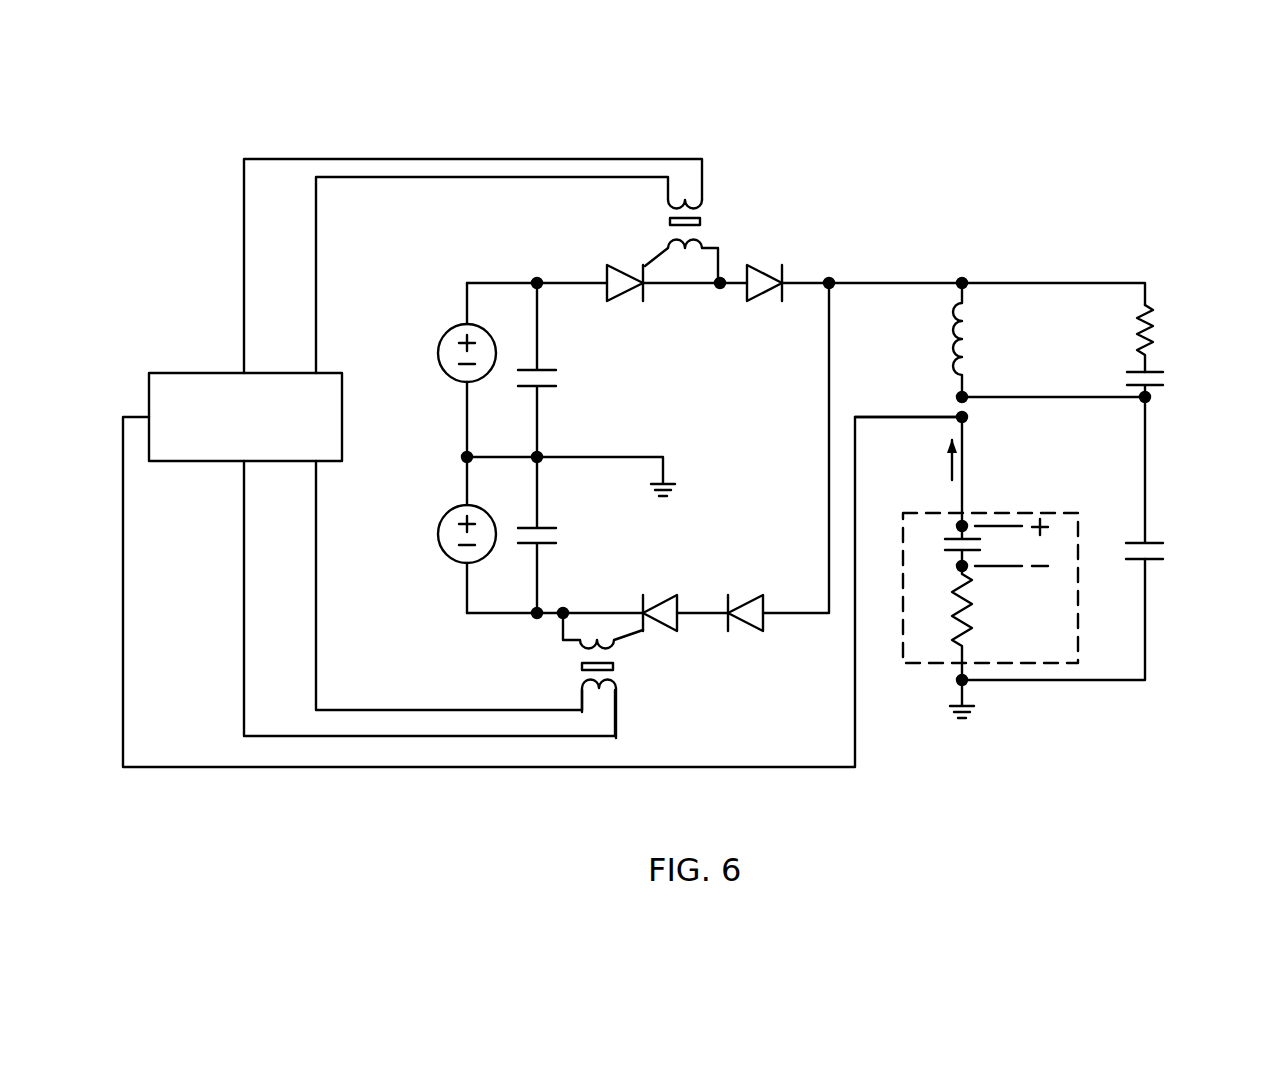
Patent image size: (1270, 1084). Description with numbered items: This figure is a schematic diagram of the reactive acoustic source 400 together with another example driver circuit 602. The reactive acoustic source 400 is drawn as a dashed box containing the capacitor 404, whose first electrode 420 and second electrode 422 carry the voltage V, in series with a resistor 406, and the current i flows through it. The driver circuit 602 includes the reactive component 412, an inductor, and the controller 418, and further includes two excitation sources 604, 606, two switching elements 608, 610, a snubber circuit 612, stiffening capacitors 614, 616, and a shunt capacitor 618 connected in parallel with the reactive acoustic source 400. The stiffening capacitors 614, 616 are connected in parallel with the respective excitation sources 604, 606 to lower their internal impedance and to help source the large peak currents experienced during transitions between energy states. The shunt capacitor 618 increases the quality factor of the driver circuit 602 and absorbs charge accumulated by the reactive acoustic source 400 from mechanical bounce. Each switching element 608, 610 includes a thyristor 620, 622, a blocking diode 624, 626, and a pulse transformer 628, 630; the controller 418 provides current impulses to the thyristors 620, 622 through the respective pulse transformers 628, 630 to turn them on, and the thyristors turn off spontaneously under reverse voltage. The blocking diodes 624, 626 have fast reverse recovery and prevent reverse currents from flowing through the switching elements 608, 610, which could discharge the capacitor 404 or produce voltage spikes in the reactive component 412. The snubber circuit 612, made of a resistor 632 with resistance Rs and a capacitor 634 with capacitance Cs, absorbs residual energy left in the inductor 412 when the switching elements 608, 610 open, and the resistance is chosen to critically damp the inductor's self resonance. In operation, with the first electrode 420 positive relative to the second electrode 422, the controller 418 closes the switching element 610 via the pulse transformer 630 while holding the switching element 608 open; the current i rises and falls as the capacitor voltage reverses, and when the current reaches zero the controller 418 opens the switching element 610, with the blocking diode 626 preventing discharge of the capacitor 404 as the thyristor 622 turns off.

The reactive acoustic source 400 is at (996, 595).
The capacitor 404 is at (944, 524).
The resistor R 406 is at (973, 623).
The reactive component 412 is at (958, 340).
The controller 418 is at (186, 373).
The first electrode 420 is at (972, 538).
The second electrode 422 is at (973, 551).
The driver circuit 602 is at (1149, 202).
The excitation source 604 is at (447, 334).
The excitation source 606 is at (447, 514).
The switching element 608 is at (707, 232).
The switching element 610 is at (628, 652).
The snubber circuit 612 is at (1188, 322).
The stiffening capacitor 614 is at (550, 370).
The stiffening capacitor 616 is at (550, 528).
The shunt capacitor 618 is at (1153, 543).
The thyristor 620 is at (610, 270).
The thyristor 622 is at (643, 600).
The blocking diode 624 is at (765, 277).
The blocking diode 626 is at (753, 629).
The pulse transformer 628 is at (701, 219).
The pulse transformer 630 is at (583, 680).
The resistor 632 is at (1152, 318).
The capacitor 634 is at (1162, 372).